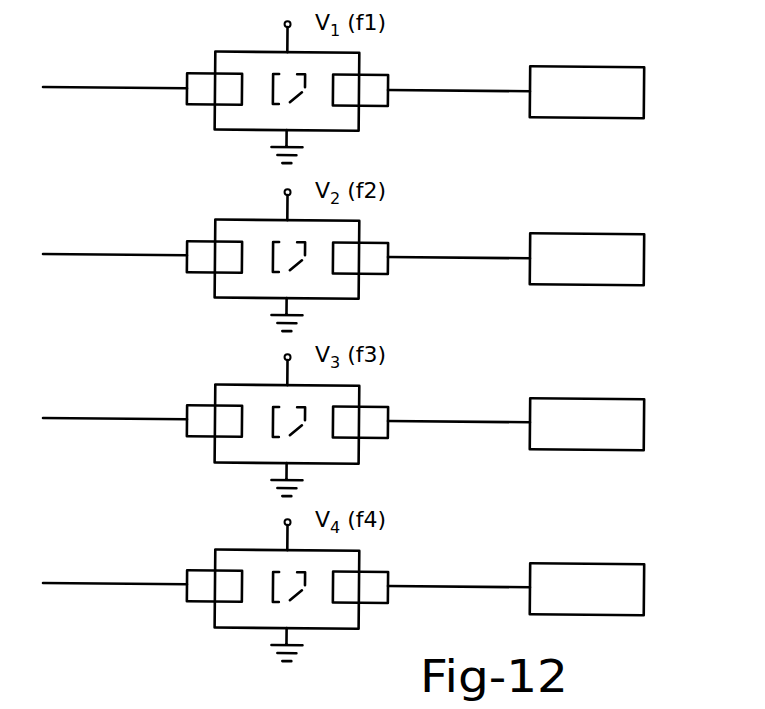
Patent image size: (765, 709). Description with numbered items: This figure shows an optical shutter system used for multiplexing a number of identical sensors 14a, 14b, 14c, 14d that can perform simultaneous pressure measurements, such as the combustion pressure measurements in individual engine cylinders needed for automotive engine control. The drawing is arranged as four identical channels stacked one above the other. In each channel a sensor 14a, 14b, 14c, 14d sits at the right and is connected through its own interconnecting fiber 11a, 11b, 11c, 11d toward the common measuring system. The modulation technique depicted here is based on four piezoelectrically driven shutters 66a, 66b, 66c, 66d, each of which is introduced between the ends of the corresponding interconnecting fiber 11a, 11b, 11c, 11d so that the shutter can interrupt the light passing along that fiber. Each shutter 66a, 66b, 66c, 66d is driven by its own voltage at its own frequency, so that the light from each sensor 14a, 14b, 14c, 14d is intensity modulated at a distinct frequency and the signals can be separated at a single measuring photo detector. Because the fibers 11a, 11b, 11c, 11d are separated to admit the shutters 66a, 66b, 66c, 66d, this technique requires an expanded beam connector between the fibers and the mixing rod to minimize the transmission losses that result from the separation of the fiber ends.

The piezoelectrically driven shutter 66a is at (232, 50).
The piezoelectrically driven shutter 66b is at (232, 218).
The piezoelectrically driven shutter 66c is at (258, 383).
The piezoelectrically driven shutter 66d is at (260, 548).
The interconnecting fiber 11a is at (443, 90).
The interconnecting fiber 11b is at (443, 255).
The interconnecting fiber 11c is at (405, 419).
The interconnecting fiber 11d is at (430, 584).
The sensor 14a is at (590, 67).
The sensor 14b is at (582, 234).
The sensor 14c is at (567, 400).
The sensor 14d is at (582, 565).